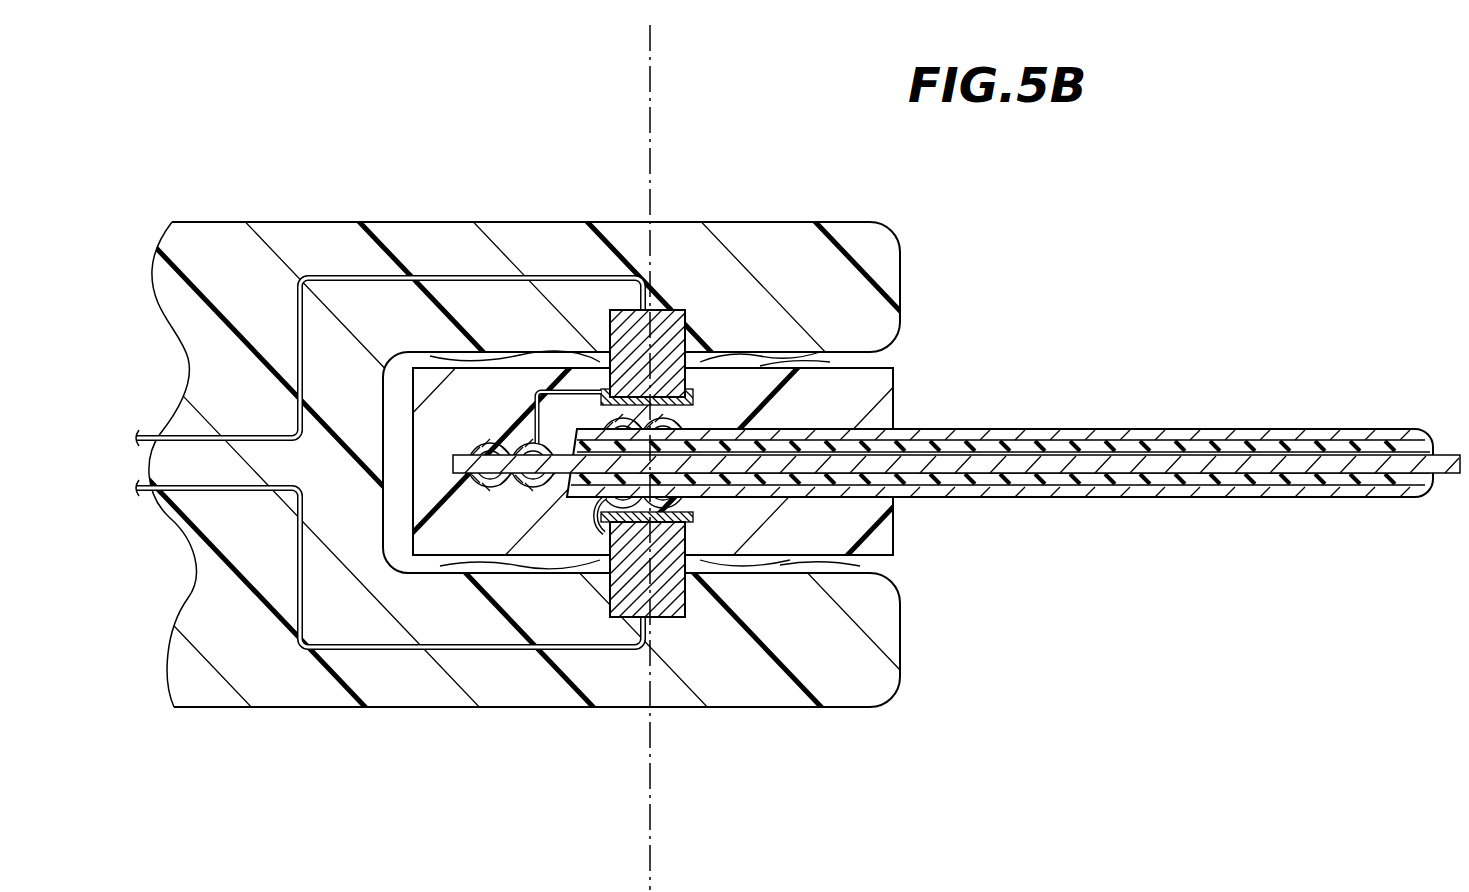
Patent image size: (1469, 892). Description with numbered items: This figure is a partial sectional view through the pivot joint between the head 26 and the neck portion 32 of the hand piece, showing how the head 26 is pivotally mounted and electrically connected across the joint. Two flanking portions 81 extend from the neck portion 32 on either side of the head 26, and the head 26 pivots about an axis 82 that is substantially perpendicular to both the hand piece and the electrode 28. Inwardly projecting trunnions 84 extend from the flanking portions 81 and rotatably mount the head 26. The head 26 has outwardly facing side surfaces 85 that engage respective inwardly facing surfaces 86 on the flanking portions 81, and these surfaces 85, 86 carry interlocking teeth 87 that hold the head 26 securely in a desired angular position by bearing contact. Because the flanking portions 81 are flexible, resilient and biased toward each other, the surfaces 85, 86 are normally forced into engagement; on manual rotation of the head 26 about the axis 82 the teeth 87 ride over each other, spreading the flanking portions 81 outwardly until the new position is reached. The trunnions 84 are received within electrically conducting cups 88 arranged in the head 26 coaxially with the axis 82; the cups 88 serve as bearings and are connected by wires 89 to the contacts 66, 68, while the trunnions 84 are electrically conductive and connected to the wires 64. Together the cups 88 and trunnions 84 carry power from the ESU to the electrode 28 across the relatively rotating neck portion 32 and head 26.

The head 26 is at (895, 373).
The electrode 28 is at (1125, 428).
The neck portion 32 is at (215, 222).
The wires 64 is at (346, 276).
The contact 66 is at (483, 446).
The contact 68 is at (668, 426).
The flanking portions 81 is at (875, 242).
The axis 82 is at (655, 828).
The trunnions 84 is at (665, 348).
The outwardly facing side surfaces 85 is at (563, 357).
The inwardly facing surfaces 86 is at (745, 356).
The interlocking teeth 87 is at (785, 354).
The electrically conducting cups 88 is at (600, 356).
The wires 89 is at (537, 392).